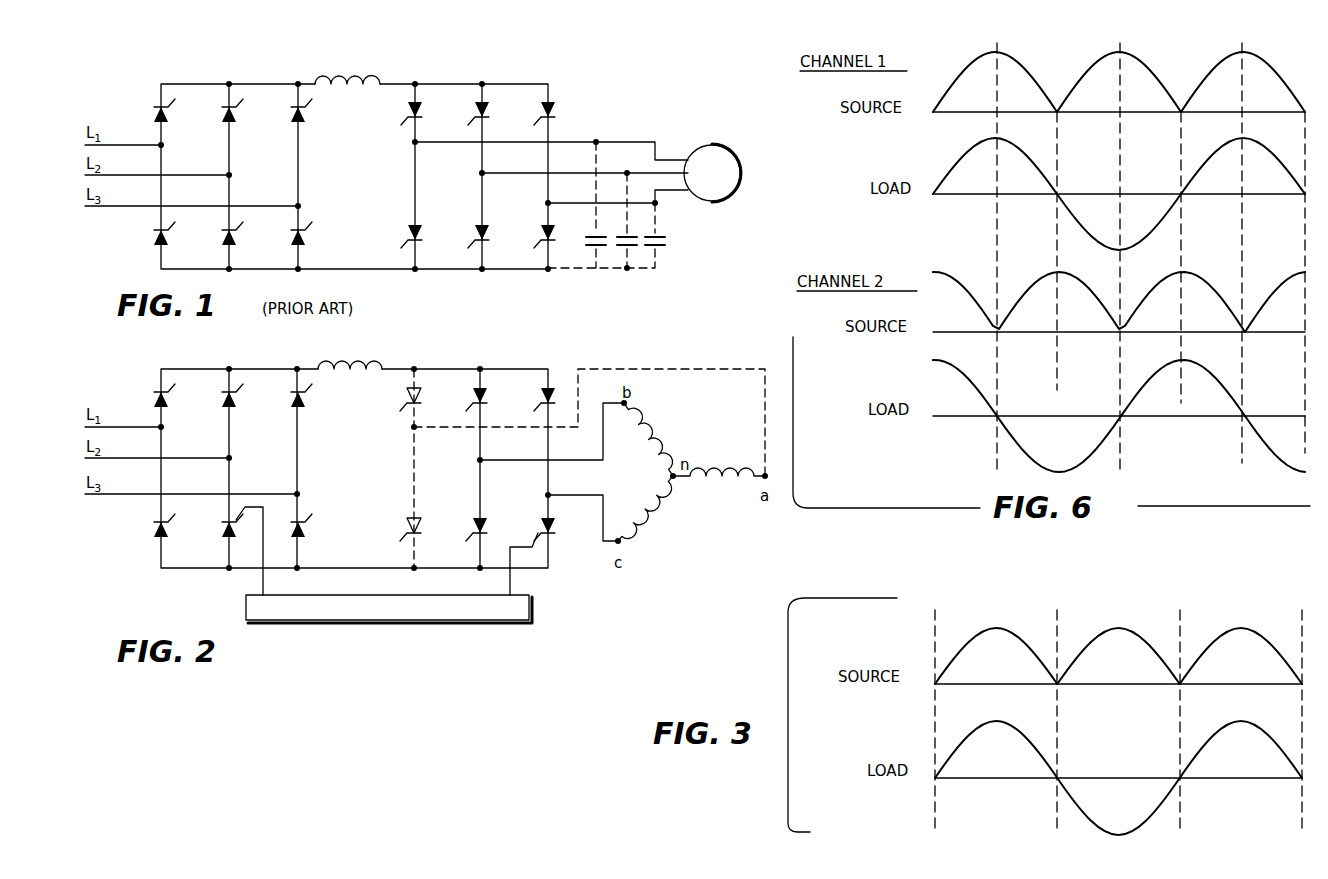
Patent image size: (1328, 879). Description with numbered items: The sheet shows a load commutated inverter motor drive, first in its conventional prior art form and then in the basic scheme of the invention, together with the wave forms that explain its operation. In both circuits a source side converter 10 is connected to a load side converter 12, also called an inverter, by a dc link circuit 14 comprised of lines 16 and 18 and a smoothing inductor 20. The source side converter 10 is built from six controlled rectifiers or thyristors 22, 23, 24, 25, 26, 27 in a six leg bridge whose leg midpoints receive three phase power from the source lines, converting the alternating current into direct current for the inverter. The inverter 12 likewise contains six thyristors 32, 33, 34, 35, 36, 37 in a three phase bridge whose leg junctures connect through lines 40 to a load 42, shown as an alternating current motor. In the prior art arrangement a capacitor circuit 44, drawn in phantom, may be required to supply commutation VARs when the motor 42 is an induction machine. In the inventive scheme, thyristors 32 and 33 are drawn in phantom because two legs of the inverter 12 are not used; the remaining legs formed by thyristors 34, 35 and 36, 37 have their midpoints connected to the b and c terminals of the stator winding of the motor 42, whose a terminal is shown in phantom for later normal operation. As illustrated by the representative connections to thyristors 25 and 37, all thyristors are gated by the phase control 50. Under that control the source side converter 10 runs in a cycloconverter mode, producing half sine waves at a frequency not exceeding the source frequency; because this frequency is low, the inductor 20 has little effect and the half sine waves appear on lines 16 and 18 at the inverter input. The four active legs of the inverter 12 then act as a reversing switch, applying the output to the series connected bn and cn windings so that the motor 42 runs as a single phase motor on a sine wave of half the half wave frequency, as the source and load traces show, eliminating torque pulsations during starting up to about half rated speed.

In FIG. 1, the source side converter 10 is at (227, 81).
In FIG. 2, the source side converter 10 is at (230, 366).
In FIG. 1, the load side converter 12 is at (489, 70).
In FIG. 2, the load side converter 12 is at (481, 357).
In FIG. 1, the dc link circuit 14 is at (388, 74).
In FIG. 2, the dc link circuit 14 is at (382, 349).
In FIG. 1, the dc link line 16 is at (316, 85).
In FIG. 2, the dc link line 16 is at (317, 370).
In FIG. 1, the dc link line 18 is at (370, 248).
In FIG. 2, the dc link line 18 is at (366, 547).
In FIG. 1, the smoothing inductor 20 is at (346, 88).
In FIG. 2, the smoothing inductor 20 is at (346, 374).
In FIG. 1, the thyristor 22 is at (170, 112).
In FIG. 2, the thyristor 22 is at (170, 397).
In FIG. 1, the thyristor 23 is at (170, 235).
In FIG. 2, the thyristor 23 is at (175, 516).
In FIG. 1, the thyristor 24 is at (238, 112).
In FIG. 2, the thyristor 24 is at (238, 397).
In FIG. 1, the thyristor 25 is at (238, 235).
In FIG. 2, the thyristor 25 is at (222, 530).
In FIG. 1, the thyristor 26 is at (307, 112).
In FIG. 2, the thyristor 26 is at (307, 397).
In FIG. 1, the thyristor 27 is at (307, 235).
In FIG. 2, the thyristor 27 is at (307, 519).
In FIG. 1, the thyristor 32 is at (421, 115).
In FIG. 2, the thyristor 32 is at (405, 404).
In FIG. 1, the thyristor 33 is at (407, 231).
In FIG. 2, the thyristor 33 is at (406, 528).
In FIG. 1, the thyristor 34 is at (488, 115).
In FIG. 2, the thyristor 34 is at (468, 409).
In FIG. 1, the thyristor 35 is at (474, 234).
In FIG. 2, the thyristor 35 is at (467, 541).
In FIG. 1, the thyristor 36 is at (554, 115).
In FIG. 2, the thyristor 36 is at (536, 409).
In FIG. 1, the thyristor 37 is at (540, 235).
In FIG. 2, the thyristor 37 is at (535, 541).
In FIG. 1, the lines 40 is at (645, 172).
In FIG. 1, the motor 42 is at (722, 114).
In FIG. 2, the motor 42 is at (686, 487).
In FIG. 1, the capacitor circuit 44 is at (666, 264).
In FIG. 2, the phase control 50 is at (246, 605).